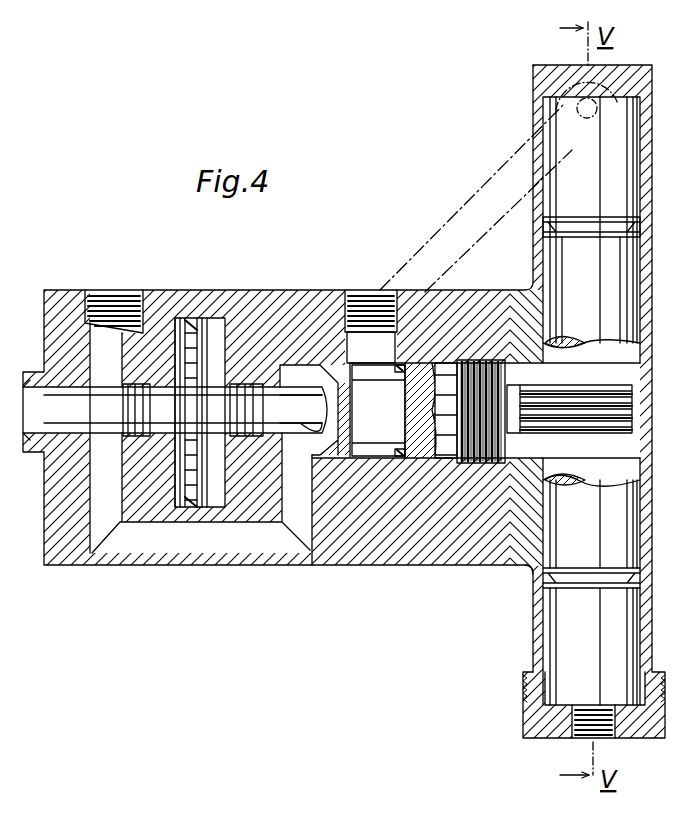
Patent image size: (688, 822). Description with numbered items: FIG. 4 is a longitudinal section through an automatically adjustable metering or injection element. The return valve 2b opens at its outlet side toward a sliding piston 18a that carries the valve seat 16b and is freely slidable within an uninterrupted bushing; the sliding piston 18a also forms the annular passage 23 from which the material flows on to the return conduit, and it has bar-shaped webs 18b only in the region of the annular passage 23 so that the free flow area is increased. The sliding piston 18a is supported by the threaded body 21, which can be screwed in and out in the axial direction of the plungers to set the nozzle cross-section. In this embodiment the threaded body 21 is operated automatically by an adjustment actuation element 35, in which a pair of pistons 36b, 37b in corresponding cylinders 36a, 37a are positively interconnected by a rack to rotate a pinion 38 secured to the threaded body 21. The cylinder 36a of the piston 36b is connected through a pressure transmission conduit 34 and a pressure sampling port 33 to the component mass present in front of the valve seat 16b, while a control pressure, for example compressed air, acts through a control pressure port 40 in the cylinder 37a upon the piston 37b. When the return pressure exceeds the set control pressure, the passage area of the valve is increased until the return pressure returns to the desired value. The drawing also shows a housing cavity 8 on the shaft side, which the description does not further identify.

The return valve 2b is at (20, 413).
The gear 8 is at (172, 545).
The valve seat 16b is at (352, 410).
The sliding piston 18a is at (412, 458).
The bar-shaped webs 18b is at (378, 375).
The threaded body 21 is at (472, 367).
The annular passage 23 is at (362, 455).
The pressure sampling port 33 is at (304, 400).
The pressure transmission conduit 34 is at (493, 197).
The adjustment actuation element 35 is at (514, 568).
The cylinder 36a is at (625, 167).
The piston 36b is at (591, 290).
The cylinder 37a is at (620, 667).
The piston 37b is at (612, 557).
The pinion 38 is at (577, 435).
The control pressure port 40 is at (572, 735).